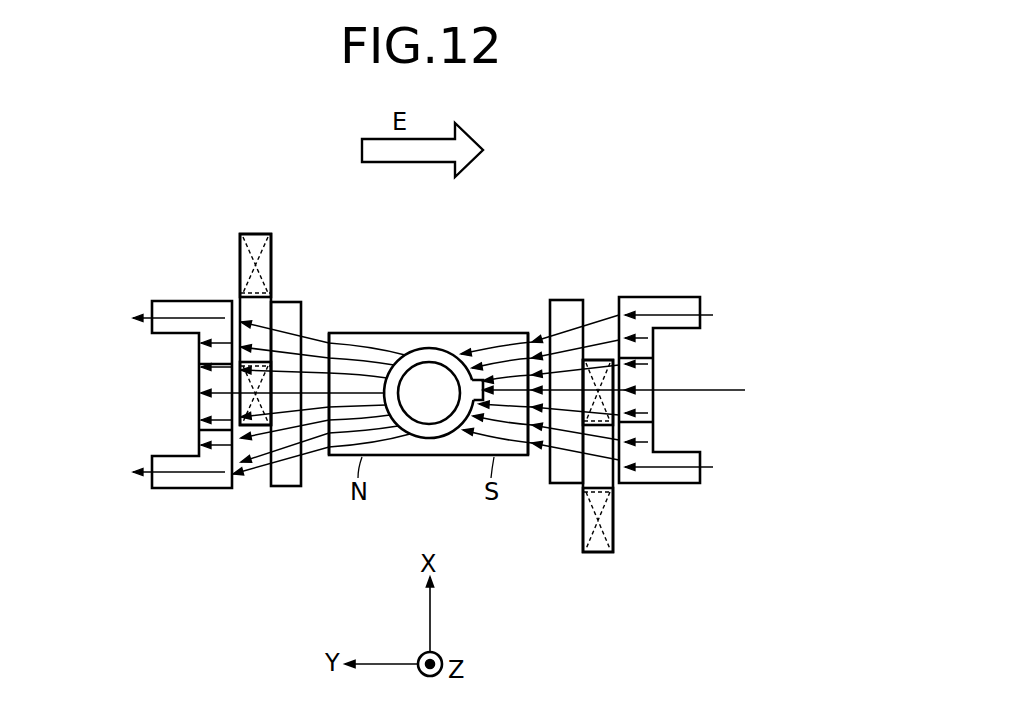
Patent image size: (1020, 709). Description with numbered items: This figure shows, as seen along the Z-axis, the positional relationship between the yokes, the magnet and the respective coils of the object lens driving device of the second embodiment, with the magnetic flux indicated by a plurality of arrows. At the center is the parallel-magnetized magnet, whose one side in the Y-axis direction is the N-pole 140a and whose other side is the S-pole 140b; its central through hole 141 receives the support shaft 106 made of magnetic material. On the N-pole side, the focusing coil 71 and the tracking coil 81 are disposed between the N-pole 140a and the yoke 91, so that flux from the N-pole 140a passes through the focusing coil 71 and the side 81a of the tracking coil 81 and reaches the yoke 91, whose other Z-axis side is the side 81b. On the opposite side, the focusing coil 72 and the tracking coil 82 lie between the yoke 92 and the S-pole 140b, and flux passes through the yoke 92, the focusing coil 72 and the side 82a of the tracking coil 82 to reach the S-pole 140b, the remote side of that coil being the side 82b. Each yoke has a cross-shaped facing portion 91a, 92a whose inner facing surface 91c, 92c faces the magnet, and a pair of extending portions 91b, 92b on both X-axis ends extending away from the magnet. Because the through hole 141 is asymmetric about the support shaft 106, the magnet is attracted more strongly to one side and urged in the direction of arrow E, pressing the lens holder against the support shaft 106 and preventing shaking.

The focusing coil 71 is at (286, 488).
The focusing coil 72 is at (558, 470).
The tracking coil 81 is at (272, 345).
The side of tracking coil 81a is at (248, 427).
The side of tracking coil 81b is at (251, 233).
The tracking coil 82 is at (633, 430).
The side of tracking coil 82a is at (600, 360).
The side of tracking coil 82b is at (583, 516).
The yoke 91 is at (160, 367).
The facing portion 91a is at (212, 376).
The extending portions 91b is at (168, 302).
The facing surface 91c is at (210, 437).
The yoke 92 is at (717, 390).
The facing portion 92a is at (632, 377).
The extending portions 92b is at (682, 296).
The facing surface 92c is at (636, 426).
The support shaft 106 is at (434, 378).
The N-pole 140a is at (324, 332).
The S-pole 140b is at (532, 332).
The through hole 141 is at (467, 355).